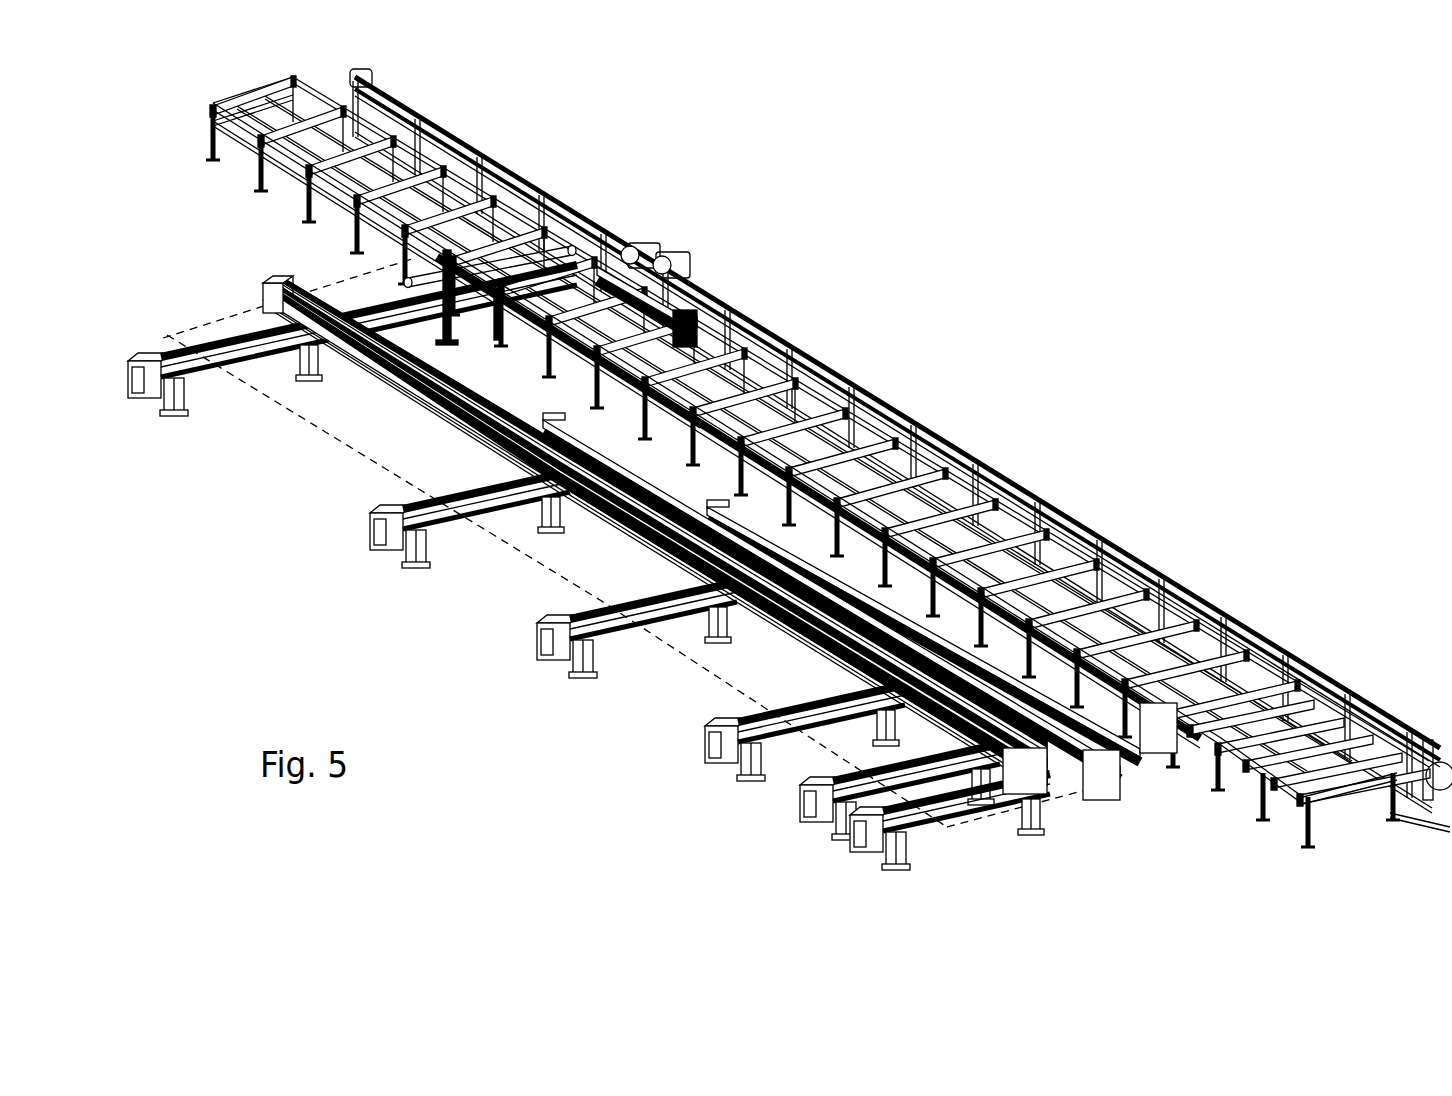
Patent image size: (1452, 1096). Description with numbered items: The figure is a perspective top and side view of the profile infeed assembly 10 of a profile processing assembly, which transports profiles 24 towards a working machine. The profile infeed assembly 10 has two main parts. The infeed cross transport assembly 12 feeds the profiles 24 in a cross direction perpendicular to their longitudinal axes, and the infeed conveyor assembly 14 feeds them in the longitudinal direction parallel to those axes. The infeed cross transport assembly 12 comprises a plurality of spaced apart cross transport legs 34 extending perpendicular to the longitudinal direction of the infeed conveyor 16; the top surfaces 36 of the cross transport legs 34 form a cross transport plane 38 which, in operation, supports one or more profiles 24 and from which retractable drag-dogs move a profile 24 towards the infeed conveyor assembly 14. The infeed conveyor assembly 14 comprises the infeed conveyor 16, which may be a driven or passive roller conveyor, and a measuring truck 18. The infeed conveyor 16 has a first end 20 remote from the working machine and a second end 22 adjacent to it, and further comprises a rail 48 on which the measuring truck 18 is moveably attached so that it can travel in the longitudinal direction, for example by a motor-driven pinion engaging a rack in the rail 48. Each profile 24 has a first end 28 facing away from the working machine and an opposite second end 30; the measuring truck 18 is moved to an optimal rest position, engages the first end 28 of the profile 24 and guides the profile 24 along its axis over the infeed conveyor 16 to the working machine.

The profile infeed assembly 10 is at (1135, 190).
The infeed cross transport assembly 12 is at (213, 245).
The infeed conveyor assembly 14 is at (952, 371).
The infeed conveyor 16 is at (985, 460).
The measuring truck 18 is at (670, 300).
The first end 20 is at (265, 90).
The second end 22 is at (1353, 787).
The profile 24 is at (640, 525).
The first end 28 is at (265, 293).
The second end 30 is at (1057, 787).
The cross transport leg 34 is at (220, 373).
The top surface 36 is at (462, 487).
The cross transport plane 38 is at (657, 645).
The rail 48 is at (495, 207).